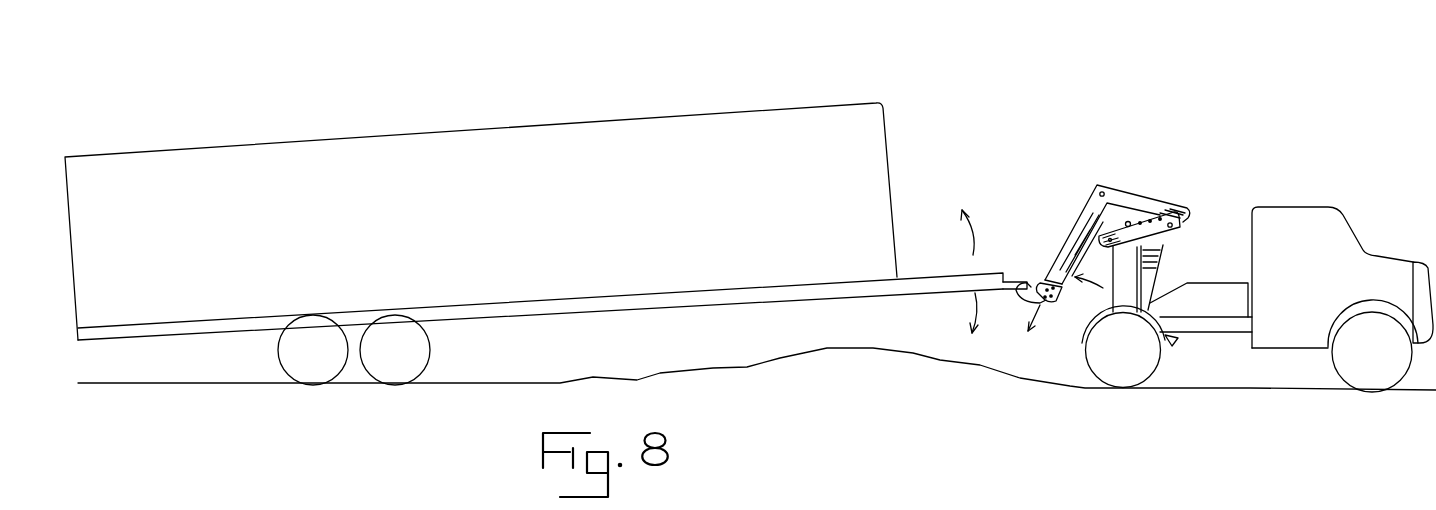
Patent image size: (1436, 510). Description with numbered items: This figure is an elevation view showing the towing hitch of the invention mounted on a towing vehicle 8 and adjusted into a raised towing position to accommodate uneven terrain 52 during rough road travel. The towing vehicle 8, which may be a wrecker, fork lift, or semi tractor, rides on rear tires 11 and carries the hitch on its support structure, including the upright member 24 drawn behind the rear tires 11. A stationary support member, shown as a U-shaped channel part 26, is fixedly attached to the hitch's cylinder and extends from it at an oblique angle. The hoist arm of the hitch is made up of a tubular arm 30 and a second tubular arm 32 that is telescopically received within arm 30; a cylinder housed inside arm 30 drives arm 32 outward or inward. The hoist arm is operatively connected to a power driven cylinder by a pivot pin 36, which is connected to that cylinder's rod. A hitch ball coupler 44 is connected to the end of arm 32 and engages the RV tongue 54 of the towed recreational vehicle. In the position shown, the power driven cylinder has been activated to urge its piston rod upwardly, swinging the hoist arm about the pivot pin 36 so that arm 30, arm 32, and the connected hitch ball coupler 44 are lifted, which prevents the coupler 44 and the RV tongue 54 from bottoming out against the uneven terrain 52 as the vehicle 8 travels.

The towing vehicle 8 is at (1305, 220).
The rear tires 11 is at (1113, 370).
The mast 24 is at (1125, 277).
The U-shaped channel part 26 is at (1185, 225).
The tubular arm 30 is at (1152, 205).
The tubular arm 32 is at (1052, 297).
The pivot pin 36 is at (1128, 222).
The hitch ball coupler 44 is at (1028, 292).
The uneven terrain 52 is at (780, 357).
The RV tongue 54 is at (1012, 277).